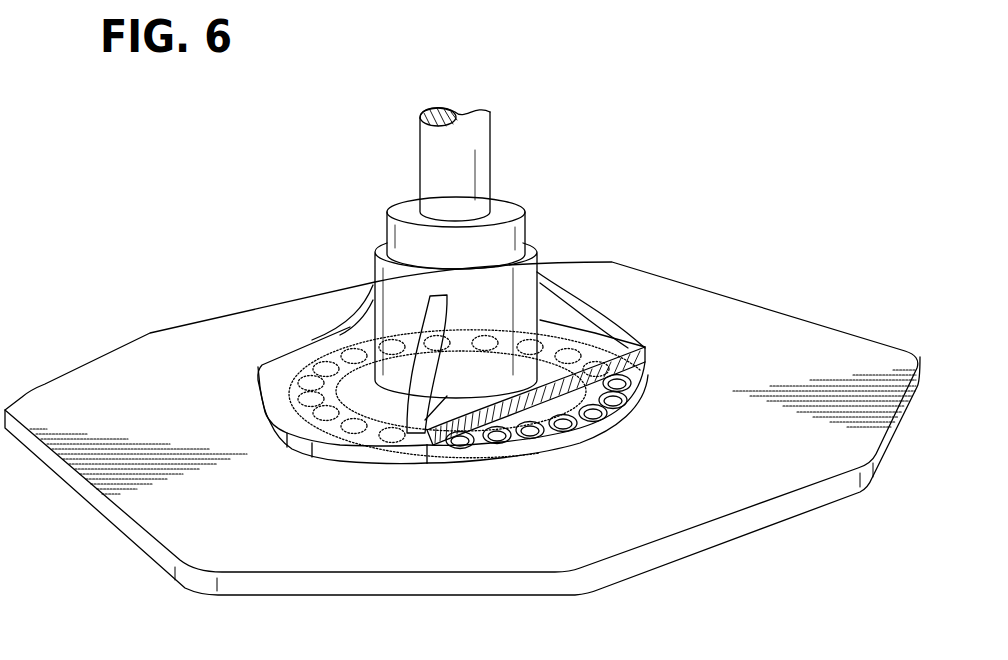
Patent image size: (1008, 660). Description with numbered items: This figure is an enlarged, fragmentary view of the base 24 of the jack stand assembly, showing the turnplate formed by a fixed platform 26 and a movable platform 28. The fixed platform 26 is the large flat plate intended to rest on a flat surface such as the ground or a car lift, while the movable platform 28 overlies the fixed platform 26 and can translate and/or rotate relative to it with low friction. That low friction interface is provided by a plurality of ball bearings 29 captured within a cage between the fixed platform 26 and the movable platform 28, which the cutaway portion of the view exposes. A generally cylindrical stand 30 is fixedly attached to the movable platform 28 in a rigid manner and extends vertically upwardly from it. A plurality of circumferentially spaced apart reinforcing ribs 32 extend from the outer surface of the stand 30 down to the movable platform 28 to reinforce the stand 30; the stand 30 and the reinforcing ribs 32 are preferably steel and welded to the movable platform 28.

The base 24 is at (377, 233).
The fixed platform 26 is at (192, 528).
The movable platform 28 is at (273, 377).
The ball bearings 29 is at (503, 451).
The stand 30 is at (505, 291).
The reinforcing ribs 32 is at (363, 313).